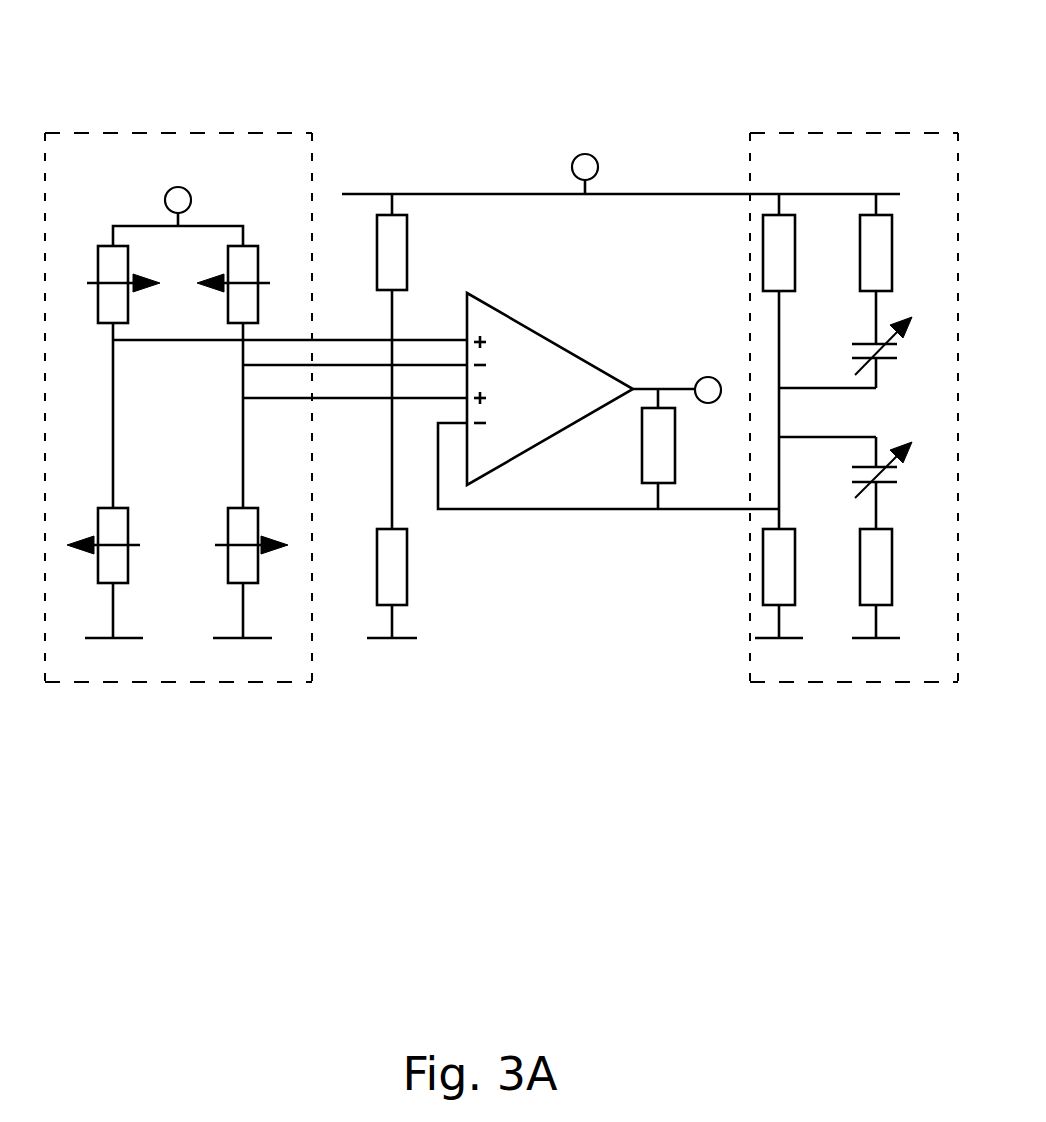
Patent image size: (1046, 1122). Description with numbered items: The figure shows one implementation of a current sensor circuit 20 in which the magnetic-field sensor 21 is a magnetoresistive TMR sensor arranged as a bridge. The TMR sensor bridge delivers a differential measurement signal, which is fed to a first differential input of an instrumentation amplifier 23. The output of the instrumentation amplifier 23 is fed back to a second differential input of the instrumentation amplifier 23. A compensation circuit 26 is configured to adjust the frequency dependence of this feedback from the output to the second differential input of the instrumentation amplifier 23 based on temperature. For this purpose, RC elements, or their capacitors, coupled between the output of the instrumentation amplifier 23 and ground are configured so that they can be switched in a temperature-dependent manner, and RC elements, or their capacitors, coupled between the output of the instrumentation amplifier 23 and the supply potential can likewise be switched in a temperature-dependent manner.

The current sensor circuit 20 is at (449, 29).
The magnetic-field sensor 21 is at (162, 133).
The instrumentation amplifier 23 is at (545, 475).
The compensation circuit 26 is at (840, 132).